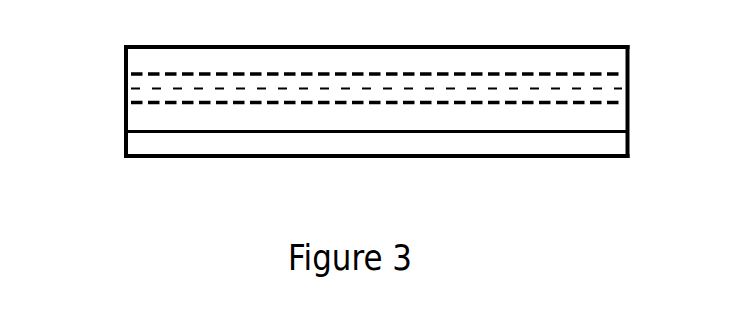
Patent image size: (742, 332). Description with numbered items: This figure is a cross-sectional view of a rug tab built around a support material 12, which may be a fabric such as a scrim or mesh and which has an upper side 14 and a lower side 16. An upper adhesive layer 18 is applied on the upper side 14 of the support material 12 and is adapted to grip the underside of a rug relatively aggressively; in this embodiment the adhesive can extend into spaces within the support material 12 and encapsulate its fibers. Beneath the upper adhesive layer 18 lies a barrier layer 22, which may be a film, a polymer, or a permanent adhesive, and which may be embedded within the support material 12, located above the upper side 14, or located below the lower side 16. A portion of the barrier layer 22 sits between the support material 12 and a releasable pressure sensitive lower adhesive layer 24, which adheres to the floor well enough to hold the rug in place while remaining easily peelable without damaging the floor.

The support material 12 is at (118, 90).
The upper side 14 is at (600, 80).
The lower side 16 is at (593, 97).
The upper adhesive layer 18 is at (153, 58).
The barrier layer 22 is at (145, 122).
The releasable pressure sensitive lower adhesive layer 24 is at (145, 145).